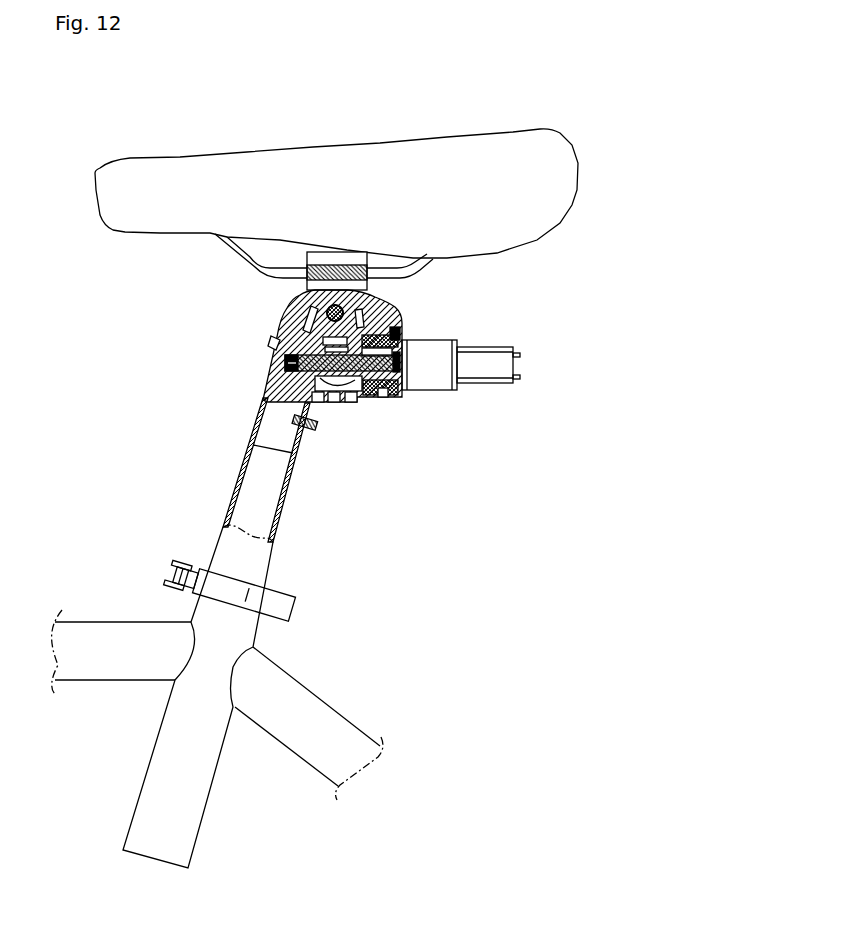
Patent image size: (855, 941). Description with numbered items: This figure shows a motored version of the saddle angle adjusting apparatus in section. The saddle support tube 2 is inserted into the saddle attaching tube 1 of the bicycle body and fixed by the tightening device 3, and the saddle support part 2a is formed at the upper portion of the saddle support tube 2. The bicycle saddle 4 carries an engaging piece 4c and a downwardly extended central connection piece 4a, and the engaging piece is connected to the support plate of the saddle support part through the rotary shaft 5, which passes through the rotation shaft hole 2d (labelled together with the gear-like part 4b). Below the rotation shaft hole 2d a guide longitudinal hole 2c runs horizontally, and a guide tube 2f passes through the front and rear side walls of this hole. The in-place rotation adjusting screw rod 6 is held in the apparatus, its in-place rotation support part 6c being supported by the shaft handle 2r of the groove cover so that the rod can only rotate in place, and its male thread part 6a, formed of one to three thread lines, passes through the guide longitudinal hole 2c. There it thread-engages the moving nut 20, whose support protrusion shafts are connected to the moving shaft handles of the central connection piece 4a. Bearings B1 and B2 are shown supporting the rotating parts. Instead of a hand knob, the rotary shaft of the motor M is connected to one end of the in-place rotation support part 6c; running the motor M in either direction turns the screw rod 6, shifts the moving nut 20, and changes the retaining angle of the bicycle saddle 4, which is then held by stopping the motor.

The saddle attaching tube 1 is at (205, 780).
The saddle support tube 2 is at (288, 498).
The saddle support part 2a is at (293, 305).
The guide longitudinal hole 2c is at (352, 397).
The rotation shaft hole 2d is at (335, 313).
The guide tube 2f is at (283, 328).
The shaft handle 2r is at (283, 367).
The tightening device 3 is at (285, 605).
The bicycle saddle 4 is at (390, 143).
The central connection piece 4a is at (357, 253).
The gear 4b is at (403, 317).
The engaging piece 4c is at (367, 288).
The rotary shaft 5 is at (329, 289).
The in-place rotation adjusting screw rod 6 is at (275, 387).
The male thread part 6a is at (317, 397).
The in-place rotation support part 6c is at (275, 343).
The moving nut 20 is at (333, 400).
The bearing B1 is at (360, 397).
The bearing B2 is at (397, 390).
The motor M is at (492, 372).